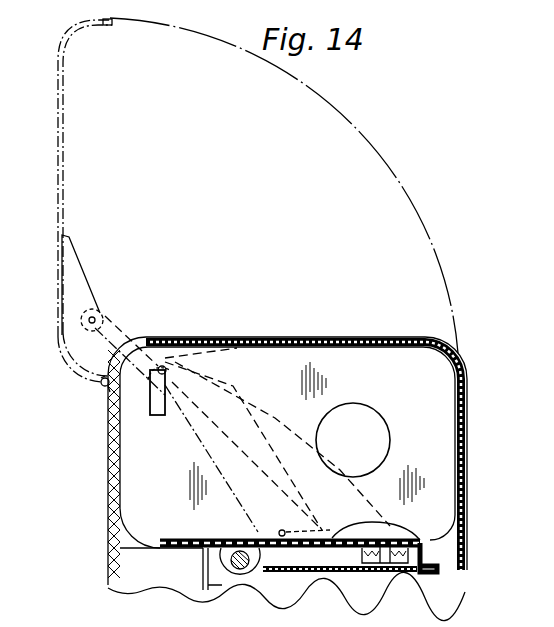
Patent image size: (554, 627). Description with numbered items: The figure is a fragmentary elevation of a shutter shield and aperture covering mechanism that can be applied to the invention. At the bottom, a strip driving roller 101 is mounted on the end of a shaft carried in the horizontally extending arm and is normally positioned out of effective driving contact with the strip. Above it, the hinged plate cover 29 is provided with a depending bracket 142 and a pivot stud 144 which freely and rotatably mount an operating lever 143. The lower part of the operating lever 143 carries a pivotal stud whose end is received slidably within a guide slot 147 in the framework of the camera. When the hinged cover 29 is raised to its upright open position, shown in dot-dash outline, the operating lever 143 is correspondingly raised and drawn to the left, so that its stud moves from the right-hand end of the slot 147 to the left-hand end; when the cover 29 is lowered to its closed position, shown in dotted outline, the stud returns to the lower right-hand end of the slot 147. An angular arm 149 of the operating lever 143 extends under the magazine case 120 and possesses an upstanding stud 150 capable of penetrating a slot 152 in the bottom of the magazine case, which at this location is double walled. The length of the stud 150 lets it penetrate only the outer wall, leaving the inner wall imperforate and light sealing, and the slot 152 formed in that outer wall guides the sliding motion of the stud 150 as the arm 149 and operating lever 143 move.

The hinged plate cover 29 is at (330, 337).
The strip driving roller 101 is at (238, 581).
The magazine case 120 is at (418, 423).
The depending bracket 142 is at (83, 266).
The operating lever 143 is at (276, 418).
The pivot stud 144 is at (110, 323).
The guide slot 147 is at (329, 527).
The angular arm 149 is at (393, 564).
The upstanding stud 150 is at (379, 548).
The slot 152 is at (333, 541).